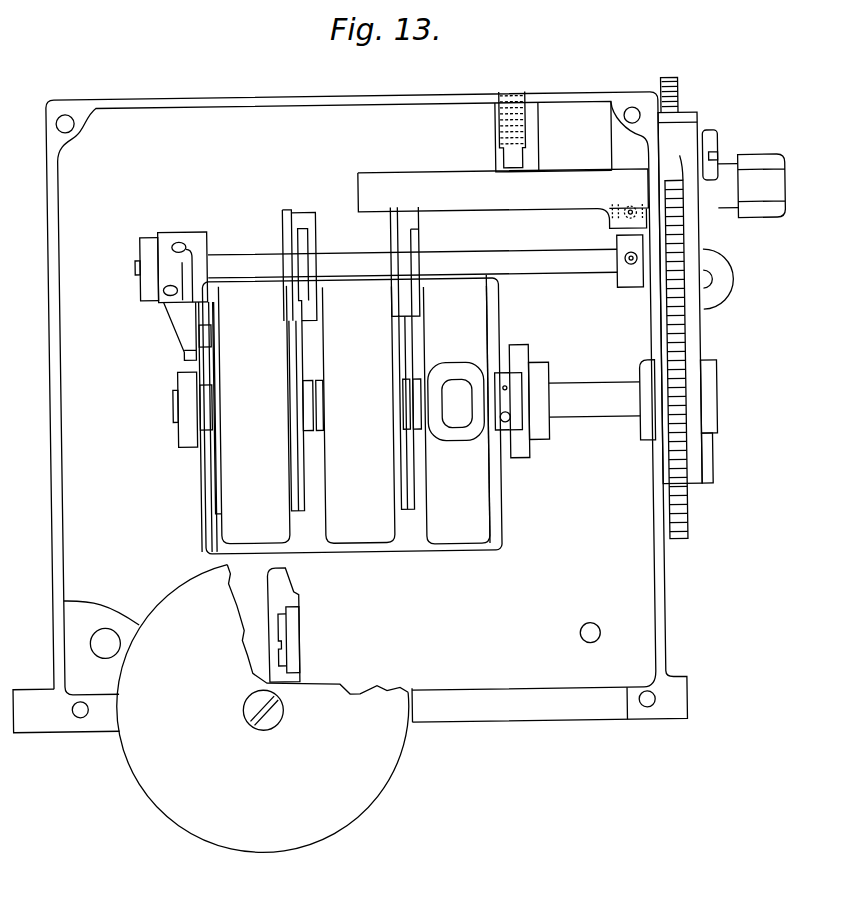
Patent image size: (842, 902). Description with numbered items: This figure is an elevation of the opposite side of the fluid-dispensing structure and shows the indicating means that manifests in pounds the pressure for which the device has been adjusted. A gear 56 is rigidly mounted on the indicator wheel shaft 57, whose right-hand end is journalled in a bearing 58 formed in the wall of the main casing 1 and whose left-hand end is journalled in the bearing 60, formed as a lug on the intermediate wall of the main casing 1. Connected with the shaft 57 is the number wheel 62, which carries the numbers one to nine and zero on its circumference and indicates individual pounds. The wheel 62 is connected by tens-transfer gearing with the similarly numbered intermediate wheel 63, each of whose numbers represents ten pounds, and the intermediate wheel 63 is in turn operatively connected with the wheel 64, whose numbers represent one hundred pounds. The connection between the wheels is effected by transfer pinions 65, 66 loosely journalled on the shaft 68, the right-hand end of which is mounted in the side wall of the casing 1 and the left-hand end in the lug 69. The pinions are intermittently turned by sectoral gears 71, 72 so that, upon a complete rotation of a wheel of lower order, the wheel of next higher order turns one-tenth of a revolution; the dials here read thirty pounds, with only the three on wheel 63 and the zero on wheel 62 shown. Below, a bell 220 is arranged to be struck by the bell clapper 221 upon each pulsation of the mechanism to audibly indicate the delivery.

The main casing 1 is at (667, 648).
The gear 56 is at (678, 450).
The indicator wheel shaft 57 is at (588, 395).
The bearing 58 is at (646, 440).
The bearing 60 is at (182, 430).
The number wheel 62 is at (475, 530).
The intermediate wheel 63 is at (368, 528).
The wheel 64 is at (251, 415).
The transfer pinion 65 is at (410, 217).
The transfer pinion 66 is at (303, 218).
The shaft 68 is at (511, 259).
The lug 69 is at (148, 244).
The sectoral gear 71 is at (398, 512).
The sectoral gear 72 is at (300, 512).
The bell 220 is at (298, 843).
The bell clapper 221 is at (300, 673).